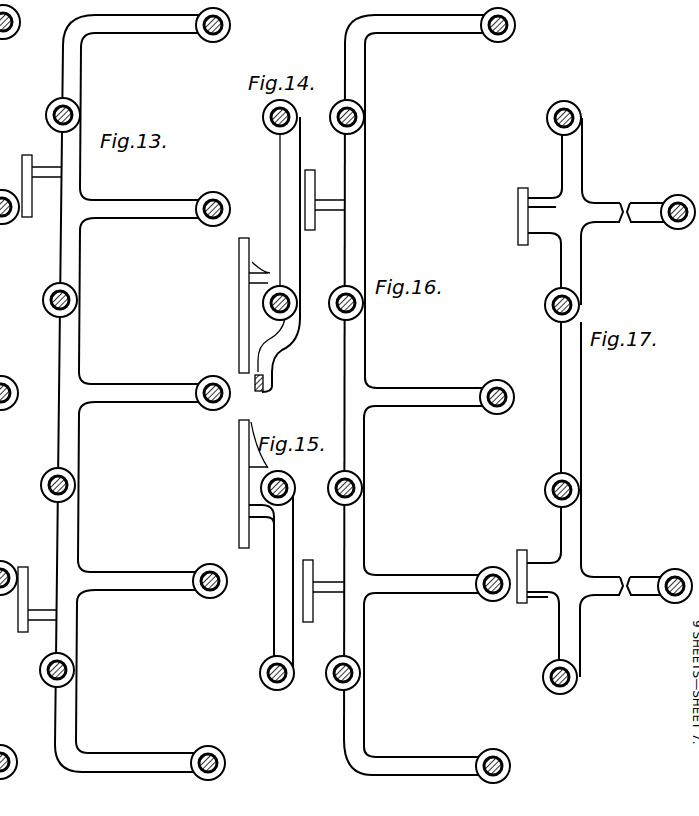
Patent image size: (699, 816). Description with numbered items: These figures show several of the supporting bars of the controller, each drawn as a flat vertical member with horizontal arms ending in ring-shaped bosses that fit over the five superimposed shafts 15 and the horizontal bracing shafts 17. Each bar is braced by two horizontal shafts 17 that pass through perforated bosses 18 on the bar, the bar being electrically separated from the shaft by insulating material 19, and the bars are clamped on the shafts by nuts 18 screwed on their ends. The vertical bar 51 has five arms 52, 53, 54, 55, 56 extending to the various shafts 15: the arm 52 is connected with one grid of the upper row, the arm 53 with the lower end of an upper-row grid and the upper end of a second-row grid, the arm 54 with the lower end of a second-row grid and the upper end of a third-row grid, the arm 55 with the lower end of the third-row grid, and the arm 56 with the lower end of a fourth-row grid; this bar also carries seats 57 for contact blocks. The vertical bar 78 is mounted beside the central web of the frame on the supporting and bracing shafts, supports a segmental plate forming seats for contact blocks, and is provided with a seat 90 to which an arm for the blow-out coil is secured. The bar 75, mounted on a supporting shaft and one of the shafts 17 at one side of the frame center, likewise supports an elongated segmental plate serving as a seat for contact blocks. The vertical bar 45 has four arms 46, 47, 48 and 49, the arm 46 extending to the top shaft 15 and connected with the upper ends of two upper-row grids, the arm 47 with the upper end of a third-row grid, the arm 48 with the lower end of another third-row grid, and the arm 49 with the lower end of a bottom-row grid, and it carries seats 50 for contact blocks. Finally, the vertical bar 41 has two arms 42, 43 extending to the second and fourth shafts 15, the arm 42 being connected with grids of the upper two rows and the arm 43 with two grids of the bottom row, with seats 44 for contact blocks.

In FIG. 13, the superimposed shaft 15 is at (231, 25).
In FIG. 16, the superimposed shaft 15 is at (516, 26).
In FIG. 17, the superimposed shaft 15 is at (675, 228).
In FIG. 13, the horizontal shaft 17 is at (80, 116).
In FIG. 14, the horizontal shaft 17 is at (271, 117).
In FIG. 15, the horizontal shaft 17 is at (292, 485).
In FIG. 16, the horizontal shaft 17 is at (364, 120).
In FIG. 17, the horizontal shaft 17 is at (553, 118).
In FIG. 13, the perforated boss 18 is at (103, 95).
In FIG. 17, the perforated boss 18 is at (548, 678).
In FIG. 17, the insulating material 19 is at (555, 690).
In FIG. 17, the vertical bar 41 is at (582, 466).
In FIG. 17, the arm 42 is at (643, 205).
In FIG. 17, the arm 43 is at (647, 571).
In FIG. 17, the seat 44 is at (518, 205).
In FIG. 16, the vertical bar 45 is at (366, 641).
In FIG. 16, the arm 46 is at (448, 35).
In FIG. 16, the arm 47 is at (446, 388).
In FIG. 16, the arm 48 is at (427, 576).
In FIG. 16, the arm 49 is at (421, 761).
In FIG. 16, the seat 50 is at (316, 192).
In FIG. 13, the vertical bar 51 is at (77, 634).
In FIG. 13, the arm 52 is at (167, 30).
In FIG. 13, the arm 53 is at (163, 218).
In FIG. 13, the arm 54 is at (152, 385).
In FIG. 13, the arm 55 is at (150, 571).
In FIG. 13, the arm 56 is at (145, 754).
In FIG. 13, the seat 57 is at (26, 162).
In FIG. 15, the bar 75 is at (275, 574).
In FIG. 14, the vertical bar 78 is at (282, 157).
In FIG. 14, the seat 90 is at (265, 393).